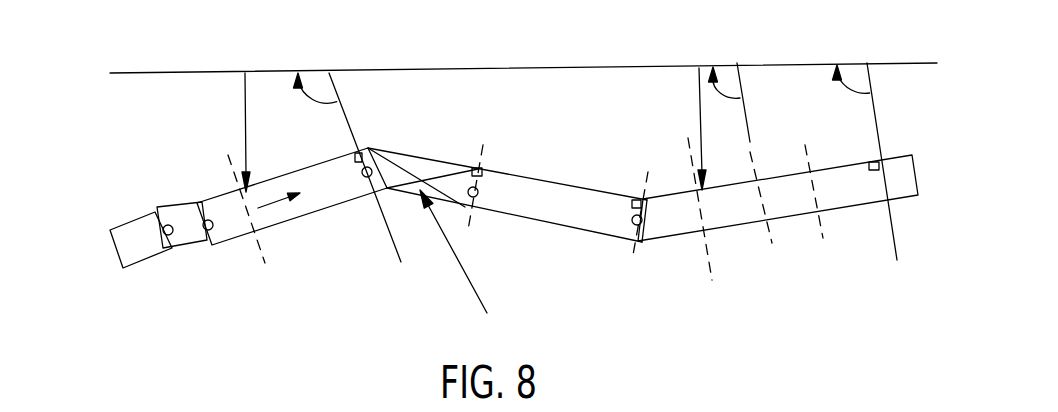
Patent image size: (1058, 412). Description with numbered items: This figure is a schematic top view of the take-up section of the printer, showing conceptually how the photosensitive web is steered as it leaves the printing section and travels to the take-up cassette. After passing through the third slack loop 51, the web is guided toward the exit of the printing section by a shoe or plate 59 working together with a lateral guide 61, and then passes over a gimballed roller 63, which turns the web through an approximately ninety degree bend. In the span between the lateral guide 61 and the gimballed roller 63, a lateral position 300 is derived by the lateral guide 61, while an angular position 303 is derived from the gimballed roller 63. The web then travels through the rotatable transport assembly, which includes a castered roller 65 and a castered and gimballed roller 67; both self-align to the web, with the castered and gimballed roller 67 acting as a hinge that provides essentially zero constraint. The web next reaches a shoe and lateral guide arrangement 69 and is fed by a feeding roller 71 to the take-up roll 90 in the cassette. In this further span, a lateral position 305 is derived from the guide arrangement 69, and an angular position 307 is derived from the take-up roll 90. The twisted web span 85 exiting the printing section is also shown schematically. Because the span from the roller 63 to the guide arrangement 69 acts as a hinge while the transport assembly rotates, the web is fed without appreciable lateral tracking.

The third slack loop 51 is at (178, 212).
The shoe or plate 59 is at (252, 227).
The lateral guide 61 is at (250, 197).
The gimballed roller 63 is at (365, 182).
The castered roller 65 is at (480, 183).
The castered and gimballed roller 67 is at (633, 212).
The shoe and lateral guide arrangement 69 is at (697, 208).
The feeding roller 71 is at (762, 203).
The twisted web span 85 is at (483, 303).
The take-up roll 90 is at (878, 158).
The lateral position 300 is at (245, 97).
The angular position 303 is at (318, 72).
The lateral position 305 is at (699, 100).
The angular position 307 is at (850, 97).